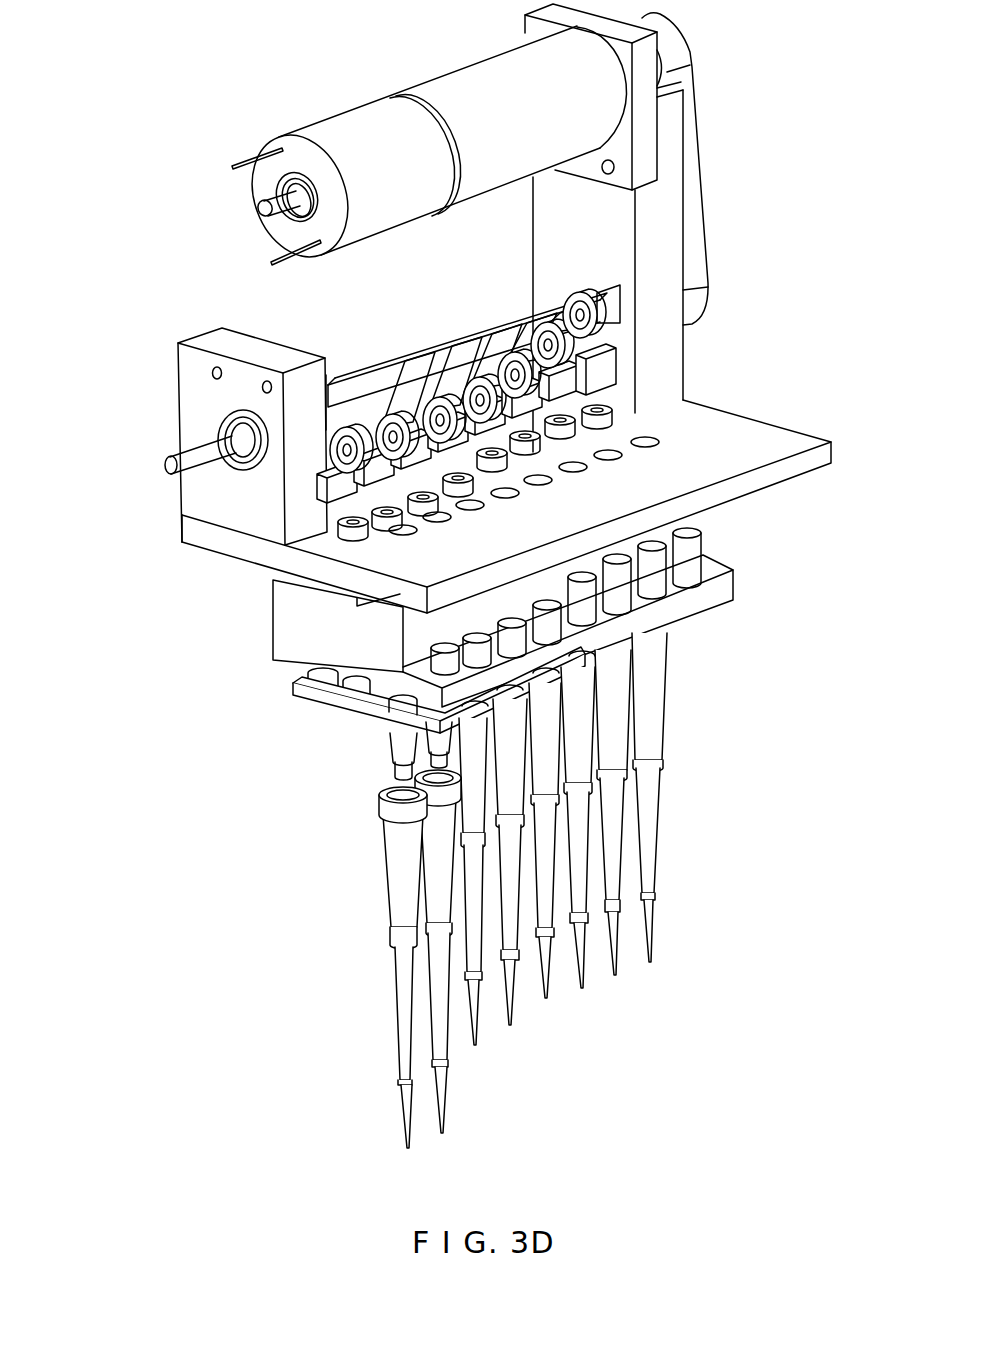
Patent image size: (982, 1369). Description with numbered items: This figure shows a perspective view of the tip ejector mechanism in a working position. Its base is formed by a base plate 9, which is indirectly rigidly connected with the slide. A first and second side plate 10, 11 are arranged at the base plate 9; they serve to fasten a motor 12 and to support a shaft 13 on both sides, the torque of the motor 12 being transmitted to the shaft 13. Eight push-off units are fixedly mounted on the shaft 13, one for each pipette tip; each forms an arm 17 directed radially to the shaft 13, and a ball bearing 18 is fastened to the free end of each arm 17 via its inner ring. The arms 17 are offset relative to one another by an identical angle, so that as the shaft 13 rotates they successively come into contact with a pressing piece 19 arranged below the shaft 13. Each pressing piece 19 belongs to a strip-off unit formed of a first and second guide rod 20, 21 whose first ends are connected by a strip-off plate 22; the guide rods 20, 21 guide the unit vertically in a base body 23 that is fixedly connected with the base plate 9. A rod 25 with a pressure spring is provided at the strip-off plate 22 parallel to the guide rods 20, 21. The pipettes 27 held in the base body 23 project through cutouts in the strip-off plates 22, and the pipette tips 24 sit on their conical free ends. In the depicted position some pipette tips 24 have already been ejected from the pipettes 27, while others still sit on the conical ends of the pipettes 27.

The base plate 9 is at (748, 432).
The first side plate 10 is at (253, 500).
The second side plate 11 is at (665, 272).
The motor 12 is at (475, 90).
The shaft 13 is at (180, 440).
The arm 17 is at (430, 365).
The ball bearing 18 is at (505, 380).
The pressing piece 19 is at (608, 375).
The first guide rod 20 is at (293, 683).
The second guide rod 21 is at (400, 748).
The strip-off plate 22 is at (360, 707).
The base body 23 is at (293, 633).
The pipette tip 24 is at (398, 865).
The rod 25 is at (322, 703).
The pipette 27 is at (440, 735).